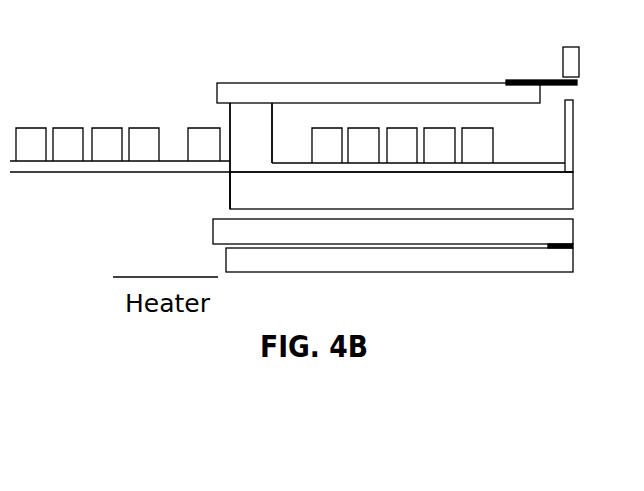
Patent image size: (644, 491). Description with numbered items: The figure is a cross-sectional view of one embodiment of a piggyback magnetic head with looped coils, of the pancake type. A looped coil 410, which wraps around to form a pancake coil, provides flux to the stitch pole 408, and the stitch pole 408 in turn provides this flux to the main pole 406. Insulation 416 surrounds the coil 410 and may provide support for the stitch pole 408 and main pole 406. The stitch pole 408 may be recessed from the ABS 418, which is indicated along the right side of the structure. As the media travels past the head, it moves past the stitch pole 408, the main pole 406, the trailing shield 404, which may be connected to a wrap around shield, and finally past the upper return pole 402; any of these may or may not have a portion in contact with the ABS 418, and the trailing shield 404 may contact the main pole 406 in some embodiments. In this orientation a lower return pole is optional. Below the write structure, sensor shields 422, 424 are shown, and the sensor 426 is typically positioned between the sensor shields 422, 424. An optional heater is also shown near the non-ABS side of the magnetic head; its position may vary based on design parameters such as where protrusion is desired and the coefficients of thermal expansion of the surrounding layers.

The upper return pole 402 is at (579, 60).
The trailing shield 404 is at (574, 143).
The main pole 406 is at (541, 80).
The stitch pole 408 is at (405, 83).
The looped coil 410 is at (471, 128).
The insulation 416 is at (453, 201).
The ABS 418 is at (576, 193).
The sensor shield 422 is at (213, 232).
The sensor shield 424 is at (226, 252).
The sensor 426 is at (575, 243).